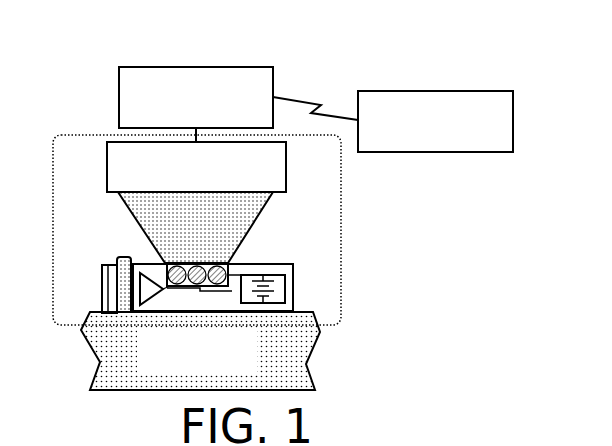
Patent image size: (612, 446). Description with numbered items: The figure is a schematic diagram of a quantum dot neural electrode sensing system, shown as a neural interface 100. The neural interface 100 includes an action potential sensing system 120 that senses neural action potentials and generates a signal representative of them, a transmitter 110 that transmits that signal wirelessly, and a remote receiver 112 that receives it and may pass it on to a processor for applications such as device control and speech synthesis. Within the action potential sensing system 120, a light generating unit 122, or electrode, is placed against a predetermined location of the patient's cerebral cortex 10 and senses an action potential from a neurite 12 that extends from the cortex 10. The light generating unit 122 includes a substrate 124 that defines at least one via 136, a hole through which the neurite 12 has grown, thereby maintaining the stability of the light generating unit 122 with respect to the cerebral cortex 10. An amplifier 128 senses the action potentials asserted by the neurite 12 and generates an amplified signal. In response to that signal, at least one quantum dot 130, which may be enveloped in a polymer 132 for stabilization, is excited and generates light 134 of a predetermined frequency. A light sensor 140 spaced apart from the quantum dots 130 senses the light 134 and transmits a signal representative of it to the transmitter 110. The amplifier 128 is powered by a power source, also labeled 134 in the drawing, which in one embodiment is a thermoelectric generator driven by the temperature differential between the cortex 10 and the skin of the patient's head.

The neural interface 100 is at (348, 51).
The transmitter 110 is at (147, 66).
The remote receiver 112 is at (397, 90).
The action potential sensing system 120 is at (109, 133).
The light sensor 140 is at (109, 194).
The light 134 is at (211, 235).
The light generating unit 122 is at (257, 262).
The polymer 132 is at (166, 266).
The amplifier 128 is at (106, 294).
The substrate 124 is at (290, 266).
The neurite 12 is at (119, 257).
The quantum dot 130 is at (125, 279).
The via 136 is at (122, 297).
The cerebral cortex 10 is at (88, 340).